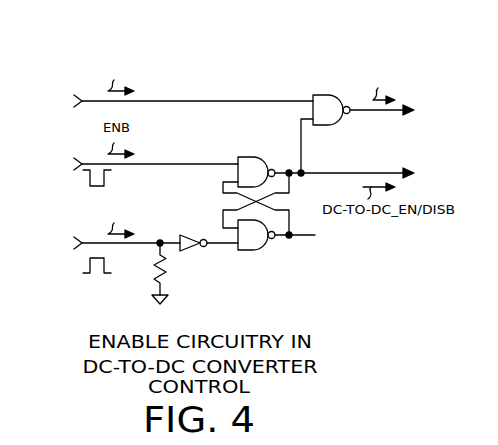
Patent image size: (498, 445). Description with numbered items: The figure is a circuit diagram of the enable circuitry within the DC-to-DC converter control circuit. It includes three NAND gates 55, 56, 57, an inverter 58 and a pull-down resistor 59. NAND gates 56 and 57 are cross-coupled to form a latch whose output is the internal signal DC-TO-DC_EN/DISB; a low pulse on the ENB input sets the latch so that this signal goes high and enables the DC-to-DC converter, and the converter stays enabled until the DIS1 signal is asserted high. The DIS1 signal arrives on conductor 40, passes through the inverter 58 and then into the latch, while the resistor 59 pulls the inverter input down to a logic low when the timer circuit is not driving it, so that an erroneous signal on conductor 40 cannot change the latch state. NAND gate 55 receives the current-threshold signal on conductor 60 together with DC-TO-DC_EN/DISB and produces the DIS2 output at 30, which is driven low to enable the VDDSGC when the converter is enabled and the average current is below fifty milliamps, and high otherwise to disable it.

The conductor 60 is at (205, 100).
The conductor 40 is at (86, 239).
The inverter 58 is at (188, 232).
The pull-down resistor 59 is at (171, 270).
The NAND gate 55 is at (321, 95).
The NAND gate 56 is at (250, 157).
The NAND gate 57 is at (249, 250).
The DIS2 output 30 is at (363, 112).